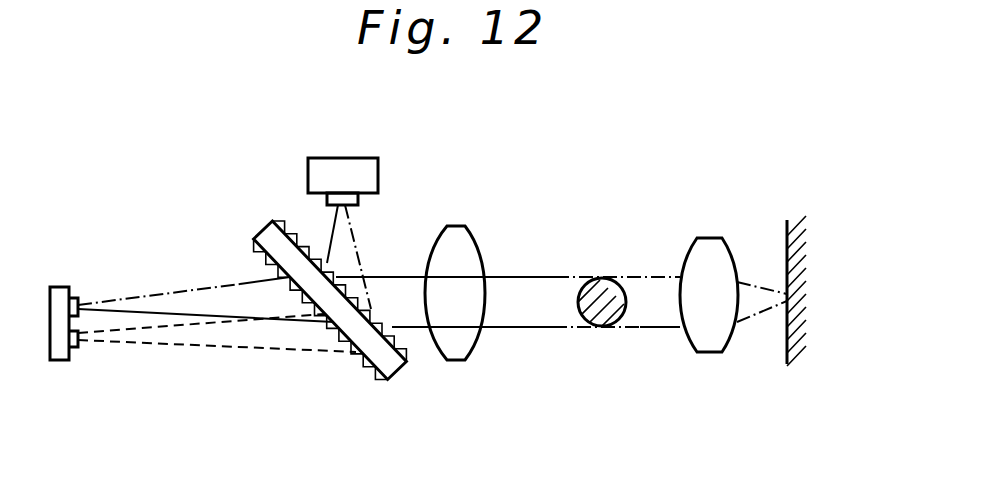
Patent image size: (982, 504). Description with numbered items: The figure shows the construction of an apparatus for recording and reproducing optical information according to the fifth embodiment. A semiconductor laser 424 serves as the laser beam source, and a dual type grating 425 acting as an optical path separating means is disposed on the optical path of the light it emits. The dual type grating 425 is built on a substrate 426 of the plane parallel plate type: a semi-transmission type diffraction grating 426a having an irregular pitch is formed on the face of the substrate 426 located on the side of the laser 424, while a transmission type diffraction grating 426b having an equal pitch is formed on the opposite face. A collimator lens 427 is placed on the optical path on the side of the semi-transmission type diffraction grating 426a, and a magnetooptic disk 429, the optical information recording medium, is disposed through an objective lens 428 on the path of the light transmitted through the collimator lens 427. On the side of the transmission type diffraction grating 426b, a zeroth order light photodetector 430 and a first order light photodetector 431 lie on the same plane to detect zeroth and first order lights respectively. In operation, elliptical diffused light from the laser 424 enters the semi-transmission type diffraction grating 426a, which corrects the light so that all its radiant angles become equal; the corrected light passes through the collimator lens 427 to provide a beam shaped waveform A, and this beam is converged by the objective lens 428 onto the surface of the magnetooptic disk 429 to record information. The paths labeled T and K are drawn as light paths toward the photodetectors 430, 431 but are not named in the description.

The semiconductor laser 424 is at (350, 158).
The dual type grating 425 is at (258, 232).
The substrate 426 is at (340, 258).
The semi-transmission type diffraction grating 426a is at (289, 224).
The transmission type diffraction grating 426b is at (321, 331).
The collimator lens 427 is at (453, 226).
The objective lens 428 is at (707, 238).
The magnetooptic disk 429 is at (788, 223).
The zeroth order light photodetector 430 is at (77, 297).
The first order light photodetector 431 is at (77, 348).
The beam shaped waveform A is at (602, 277).
The transmitted light path T is at (169, 292).
The diffracted light path K is at (183, 346).